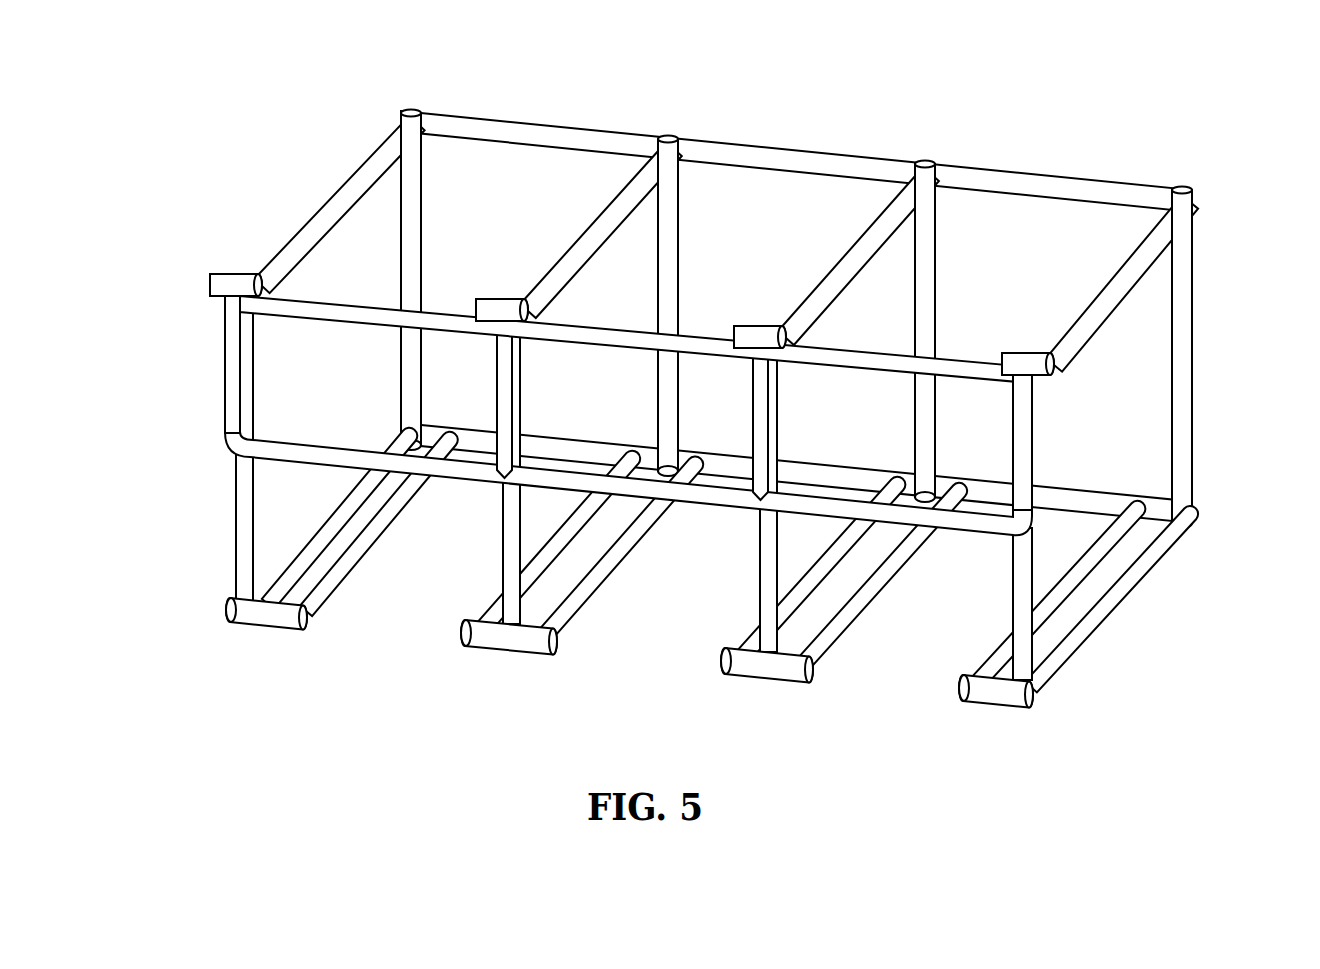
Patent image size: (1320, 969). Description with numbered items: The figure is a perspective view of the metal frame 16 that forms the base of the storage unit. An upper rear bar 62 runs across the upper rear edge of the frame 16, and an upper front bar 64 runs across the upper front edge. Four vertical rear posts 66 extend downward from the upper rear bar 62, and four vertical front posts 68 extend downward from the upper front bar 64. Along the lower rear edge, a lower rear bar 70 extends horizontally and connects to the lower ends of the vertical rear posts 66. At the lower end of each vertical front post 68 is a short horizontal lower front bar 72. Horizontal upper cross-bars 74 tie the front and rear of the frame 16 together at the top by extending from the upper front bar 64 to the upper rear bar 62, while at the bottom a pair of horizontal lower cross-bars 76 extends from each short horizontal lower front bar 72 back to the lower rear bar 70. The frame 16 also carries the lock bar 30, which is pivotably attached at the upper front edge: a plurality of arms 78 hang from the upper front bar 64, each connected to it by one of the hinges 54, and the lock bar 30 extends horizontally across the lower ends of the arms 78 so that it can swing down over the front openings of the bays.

The frame 16 is at (1143, 135).
The lock bar 30 is at (290, 444).
The hinge 54 is at (210, 283).
The upper rear bar 62 is at (1100, 185).
The upper front bar 64 is at (950, 358).
The vertical rear post 66 is at (421, 167).
The vertical front post 68 is at (236, 508).
The lower rear bar 70 is at (1082, 494).
The short horizontal lower front bar 72 is at (268, 615).
The horizontal upper cross-bar 74 is at (332, 198).
The horizontal lower cross-bar 76 is at (305, 557).
The arm 78 is at (225, 360).